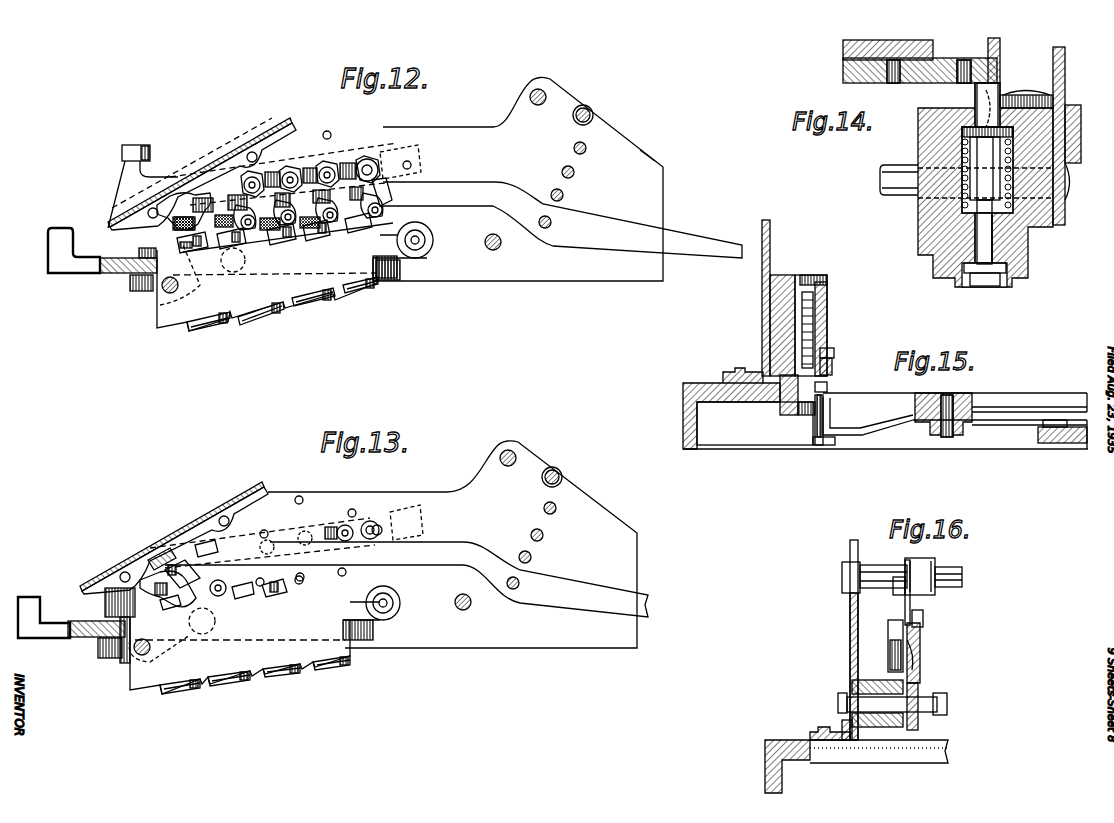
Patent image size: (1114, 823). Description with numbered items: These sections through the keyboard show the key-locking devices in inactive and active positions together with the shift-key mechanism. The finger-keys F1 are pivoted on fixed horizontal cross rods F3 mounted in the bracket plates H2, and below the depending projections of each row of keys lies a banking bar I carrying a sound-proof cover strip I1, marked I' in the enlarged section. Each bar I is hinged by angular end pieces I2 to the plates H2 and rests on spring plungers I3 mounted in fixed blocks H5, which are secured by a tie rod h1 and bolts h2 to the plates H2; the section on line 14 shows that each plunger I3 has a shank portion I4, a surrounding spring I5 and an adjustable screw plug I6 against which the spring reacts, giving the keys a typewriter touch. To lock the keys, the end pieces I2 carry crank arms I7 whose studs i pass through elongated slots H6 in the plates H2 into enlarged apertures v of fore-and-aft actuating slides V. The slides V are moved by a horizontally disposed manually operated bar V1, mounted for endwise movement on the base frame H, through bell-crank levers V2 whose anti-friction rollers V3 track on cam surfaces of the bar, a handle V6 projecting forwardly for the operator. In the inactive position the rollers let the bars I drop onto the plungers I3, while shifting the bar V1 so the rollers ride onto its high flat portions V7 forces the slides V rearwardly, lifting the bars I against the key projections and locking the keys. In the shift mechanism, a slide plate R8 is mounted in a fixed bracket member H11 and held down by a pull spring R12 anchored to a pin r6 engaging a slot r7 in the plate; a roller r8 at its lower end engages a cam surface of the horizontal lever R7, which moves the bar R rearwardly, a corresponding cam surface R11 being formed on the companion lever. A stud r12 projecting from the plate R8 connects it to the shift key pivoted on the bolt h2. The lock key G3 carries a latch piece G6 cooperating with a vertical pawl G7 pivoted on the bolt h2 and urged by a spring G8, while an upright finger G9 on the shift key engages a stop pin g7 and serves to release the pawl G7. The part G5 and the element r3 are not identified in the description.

In FIG. 12, the base frame H is at (464, 131).
In FIG. 15, the base frame H is at (885, 408).
In FIG. 16, the base frame H is at (932, 748).
In FIG. 12, the bracket plates H2 is at (652, 157).
In FIG. 13, the bracket plates H2 is at (447, 498).
In FIG. 14, the bracket plates H2 is at (1065, 55).
In FIG. 15, the bracket plates H2 is at (770, 258).
In FIG. 16, the bracket plates H2 is at (850, 652).
In FIG. 12, the fixed blocks H5 is at (277, 290).
In FIG. 13, the fixed blocks H5 is at (205, 680).
In FIG. 14, the fixed blocks H5 is at (920, 235).
In FIG. 12, the elongated slots H6 is at (358, 160).
In FIG. 13, the elongated slots H6 is at (353, 525).
In FIG. 15, the fixed bracket members H11 is at (795, 280).
In FIG. 12, the finger-keys F1 is at (523, 198).
In FIG. 13, the finger-keys F1 is at (610, 590).
In FIG. 12, the cross rods F3 is at (574, 168).
In FIG. 13, the cross rods F3 is at (543, 532).
In FIG. 16, the lock key G3 is at (918, 558).
In FIG. 12, the shaft G5 is at (588, 109).
In FIG. 13, the shaft G5 is at (557, 471).
In FIG. 16, the shaft G5 is at (962, 574).
In FIG. 16, the latch piece G6 is at (898, 595).
In FIG. 16, the vertical pawl G7 is at (920, 652).
In FIG. 16, the stop pin g7 is at (923, 615).
In FIG. 16, the spring G8 is at (888, 655).
In FIG. 16, the upright finger G9 is at (918, 675).
In FIG. 12, the tie rod h1 is at (165, 292).
In FIG. 14, the tie rod h1 is at (902, 195).
In FIG. 12, the bolts h2 is at (426, 235).
In FIG. 16, the bolts h2 is at (925, 700).
In FIG. 12, the banking bar I is at (178, 249).
In FIG. 13, the banking bar I is at (168, 583).
In FIG. 14, the sound-proof cover strip I' is at (920, 81).
In FIG. 13, the sound-proof cover strip I1 is at (176, 583).
In FIG. 14, the sound-proof cover strip I1 is at (920, 40).
In FIG. 12, the angular end pieces I2 is at (362, 218).
In FIG. 13, the angular end pieces I2 is at (196, 628).
In FIG. 14, the angular end pieces I2 is at (1000, 55).
In FIG. 12, the spring plungers I3 is at (200, 252).
In FIG. 13, the spring plungers I3 is at (152, 615).
In FIG. 14, the spring plungers I3 is at (992, 100).
In FIG. 14, the shank portion I4 is at (984, 232).
In FIG. 14, the spring I5 is at (987, 167).
In FIG. 13, the adjustable screw plug I6 is at (290, 678).
In FIG. 14, the adjustable screw plug I6 is at (965, 280).
In FIG. 12, the crank arm I7 is at (378, 160).
In FIG. 13, the crank arm I7 is at (228, 585).
In FIG. 12, the studs i is at (290, 175).
In FIG. 12, the enlarged apertures v is at (300, 177).
In FIG. 12, the actuating slides V is at (420, 160).
In FIG. 13, the actuating slides V is at (318, 533).
In FIG. 12, the manually operated bar V1 is at (118, 273).
In FIG. 13, the manually operated bar V1 is at (380, 525).
In FIG. 14, the bell-crank levers V2 is at (1076, 104).
In FIG. 12, the anti-friction rollers V3 is at (139, 251).
In FIG. 13, the anti-friction rollers V3 is at (105, 605).
In FIG. 14, the anti-friction rollers V3 is at (1025, 92).
In FIG. 12, the handle V6 is at (60, 229).
In FIG. 13, the handle V6 is at (40, 597).
In FIG. 13, the high flat portions V7 is at (85, 637).
In FIG. 12, the section line 14 is at (168, 170).
In FIG. 15, the bar R is at (1075, 449).
In FIG. 15, the horizontal lever R7 is at (865, 430).
In FIG. 15, the slide plate R8 is at (835, 310).
In FIG. 15, the cam surface R11 is at (1038, 433).
In FIG. 15, the pull springs R12 is at (827, 288).
In FIG. 15, the block r3 is at (940, 437).
In FIG. 15, the pins r6 is at (832, 366).
In FIG. 15, the slots r7 is at (827, 386).
In FIG. 15, the anti-friction roller r8 is at (825, 445).
In FIG. 15, the studs r12 is at (834, 350).